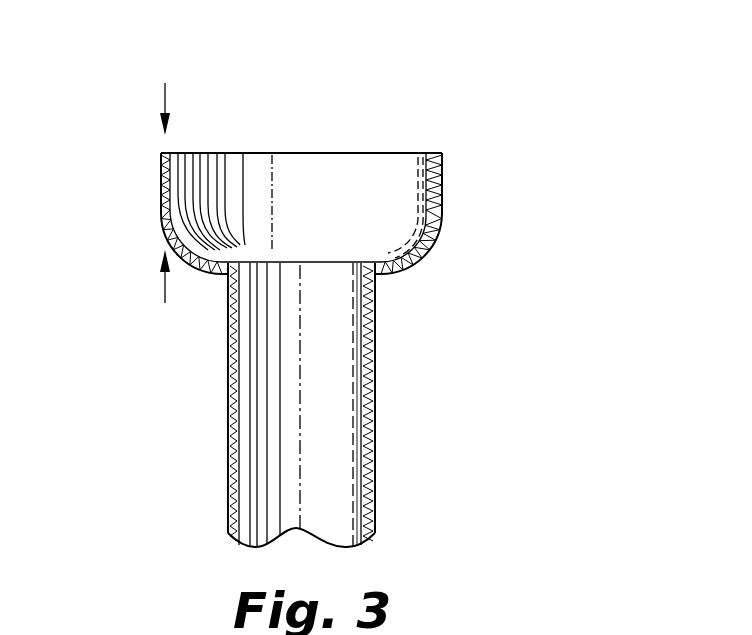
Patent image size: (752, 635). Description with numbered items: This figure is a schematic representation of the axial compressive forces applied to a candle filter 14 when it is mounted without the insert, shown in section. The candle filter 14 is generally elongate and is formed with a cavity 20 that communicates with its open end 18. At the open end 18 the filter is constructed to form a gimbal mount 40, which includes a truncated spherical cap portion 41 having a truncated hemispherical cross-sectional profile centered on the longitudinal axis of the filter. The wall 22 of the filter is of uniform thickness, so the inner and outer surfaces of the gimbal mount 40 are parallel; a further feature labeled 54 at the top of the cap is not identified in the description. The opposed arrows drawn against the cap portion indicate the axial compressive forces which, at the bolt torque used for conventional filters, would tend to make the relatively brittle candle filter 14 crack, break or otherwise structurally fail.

The candle filter 14 is at (341, 59).
The open end 18 is at (290, 153).
The top surface of valve head 54 is at (363, 153).
The gimbal mount 40 is at (151, 169).
The truncated spherical cap portion 41 is at (168, 242).
The cavity 20 is at (345, 330).
The wall 22 is at (377, 370).